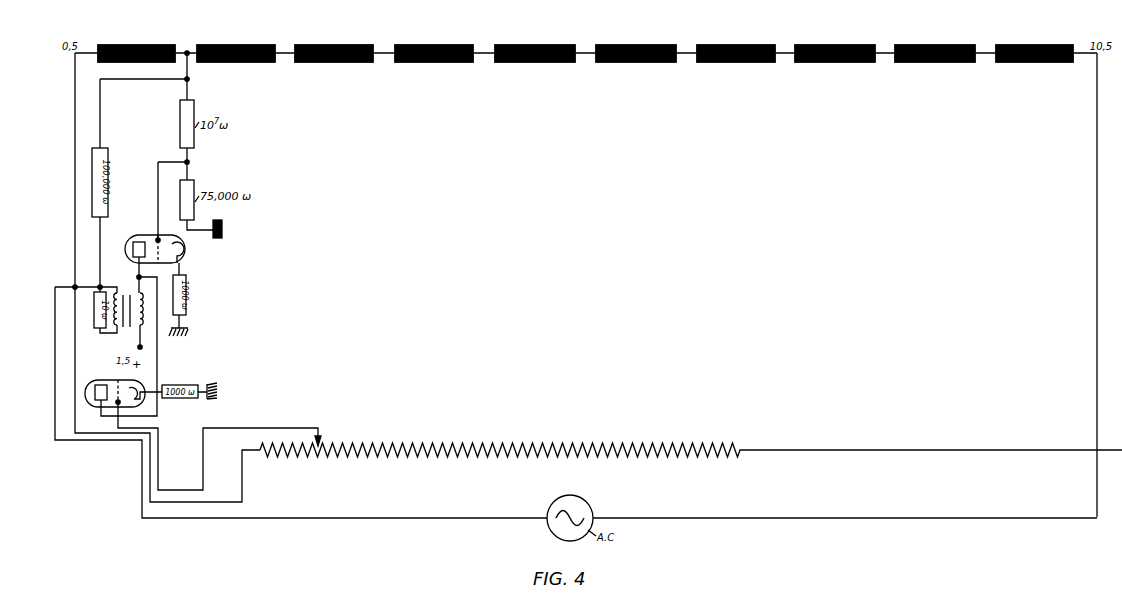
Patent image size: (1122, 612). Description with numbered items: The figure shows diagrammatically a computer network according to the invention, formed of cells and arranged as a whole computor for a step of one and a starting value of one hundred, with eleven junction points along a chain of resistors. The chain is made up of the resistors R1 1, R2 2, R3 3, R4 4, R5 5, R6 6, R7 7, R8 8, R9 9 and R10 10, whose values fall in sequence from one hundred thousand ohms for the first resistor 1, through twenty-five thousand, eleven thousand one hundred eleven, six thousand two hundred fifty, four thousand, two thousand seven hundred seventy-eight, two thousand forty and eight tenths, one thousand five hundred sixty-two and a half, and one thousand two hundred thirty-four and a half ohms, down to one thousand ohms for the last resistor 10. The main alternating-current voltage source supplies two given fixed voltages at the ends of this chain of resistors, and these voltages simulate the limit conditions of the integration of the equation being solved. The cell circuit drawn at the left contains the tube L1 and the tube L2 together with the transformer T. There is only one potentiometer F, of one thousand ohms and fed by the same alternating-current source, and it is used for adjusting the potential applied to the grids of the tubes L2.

The resistor R1 1 is at (136, 45).
The resistor R2 2 is at (236, 45).
The resistor R3 3 is at (334, 45).
The resistor R4 4 is at (434, 45).
The resistor R5 5 is at (535, 45).
The resistor R6 6 is at (636, 45).
The resistor R7 7 is at (736, 45).
The resistor R8 8 is at (835, 45).
The resistor R9 9 is at (935, 45).
The resistor R10 10 is at (1034, 45).
The tube L1 is at (152, 239).
The tube L2 is at (108, 379).
The transformer T is at (125, 330).
The potentiometer F is at (578, 432).